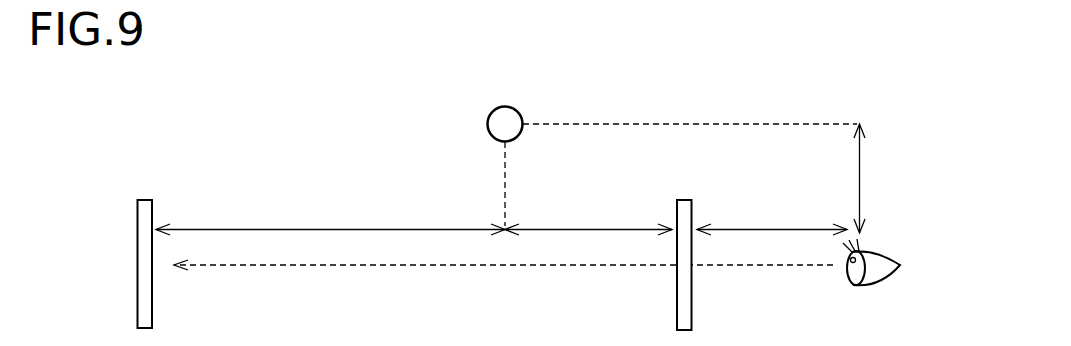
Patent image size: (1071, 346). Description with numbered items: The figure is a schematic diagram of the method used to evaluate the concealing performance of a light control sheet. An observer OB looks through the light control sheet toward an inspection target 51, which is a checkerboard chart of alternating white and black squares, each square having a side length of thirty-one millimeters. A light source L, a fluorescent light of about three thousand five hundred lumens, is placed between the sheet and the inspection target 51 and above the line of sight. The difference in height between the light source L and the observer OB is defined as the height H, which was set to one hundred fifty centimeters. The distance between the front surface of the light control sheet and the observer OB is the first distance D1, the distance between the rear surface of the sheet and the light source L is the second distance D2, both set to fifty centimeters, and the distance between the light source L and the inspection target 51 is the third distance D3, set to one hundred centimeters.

The inspection target 51 is at (145, 200).
The light source L is at (505, 106).
The observer OB is at (888, 253).
The height H is at (869, 178).
The first distance D1 is at (772, 219).
The second distance D2 is at (588, 219).
The third distance D3 is at (330, 219).